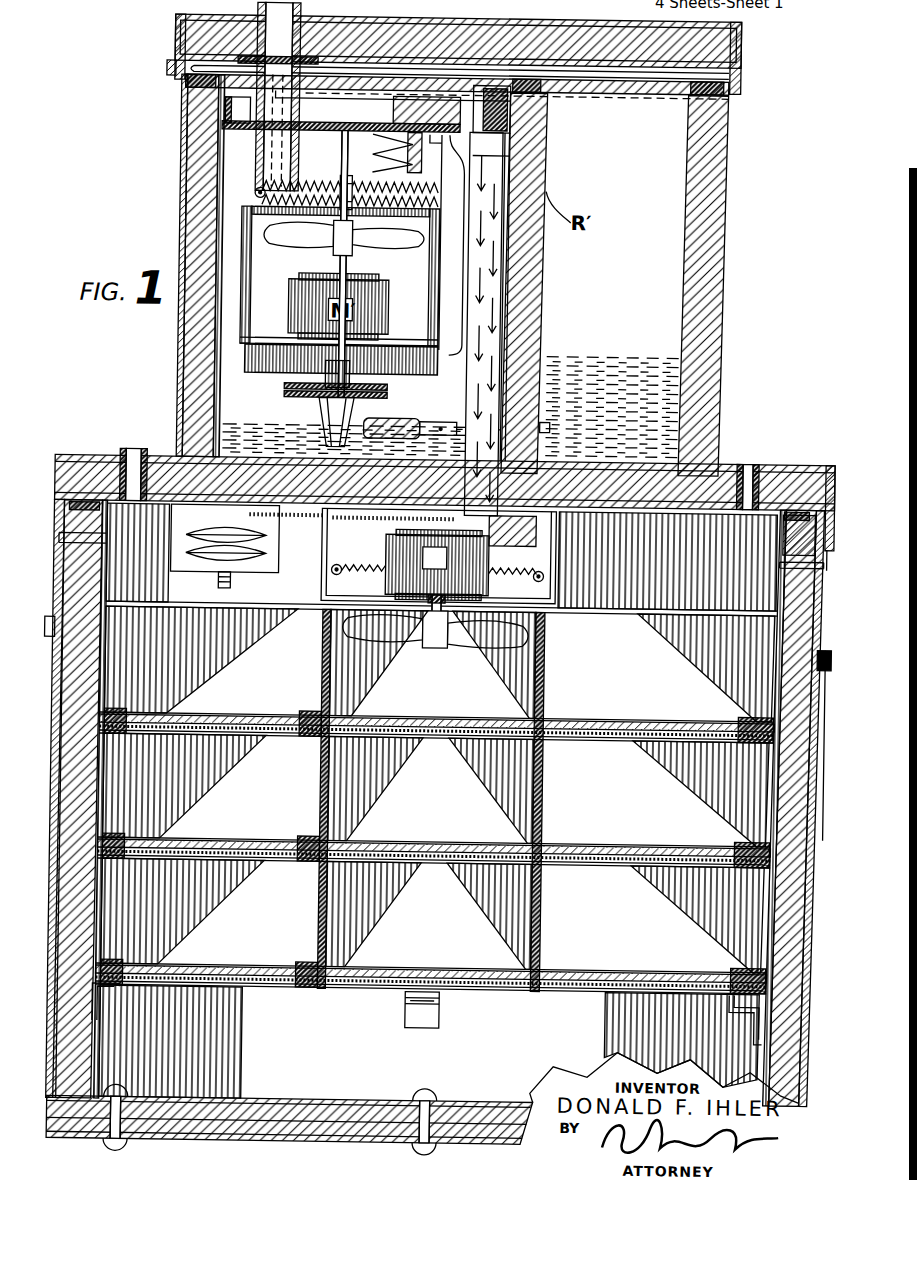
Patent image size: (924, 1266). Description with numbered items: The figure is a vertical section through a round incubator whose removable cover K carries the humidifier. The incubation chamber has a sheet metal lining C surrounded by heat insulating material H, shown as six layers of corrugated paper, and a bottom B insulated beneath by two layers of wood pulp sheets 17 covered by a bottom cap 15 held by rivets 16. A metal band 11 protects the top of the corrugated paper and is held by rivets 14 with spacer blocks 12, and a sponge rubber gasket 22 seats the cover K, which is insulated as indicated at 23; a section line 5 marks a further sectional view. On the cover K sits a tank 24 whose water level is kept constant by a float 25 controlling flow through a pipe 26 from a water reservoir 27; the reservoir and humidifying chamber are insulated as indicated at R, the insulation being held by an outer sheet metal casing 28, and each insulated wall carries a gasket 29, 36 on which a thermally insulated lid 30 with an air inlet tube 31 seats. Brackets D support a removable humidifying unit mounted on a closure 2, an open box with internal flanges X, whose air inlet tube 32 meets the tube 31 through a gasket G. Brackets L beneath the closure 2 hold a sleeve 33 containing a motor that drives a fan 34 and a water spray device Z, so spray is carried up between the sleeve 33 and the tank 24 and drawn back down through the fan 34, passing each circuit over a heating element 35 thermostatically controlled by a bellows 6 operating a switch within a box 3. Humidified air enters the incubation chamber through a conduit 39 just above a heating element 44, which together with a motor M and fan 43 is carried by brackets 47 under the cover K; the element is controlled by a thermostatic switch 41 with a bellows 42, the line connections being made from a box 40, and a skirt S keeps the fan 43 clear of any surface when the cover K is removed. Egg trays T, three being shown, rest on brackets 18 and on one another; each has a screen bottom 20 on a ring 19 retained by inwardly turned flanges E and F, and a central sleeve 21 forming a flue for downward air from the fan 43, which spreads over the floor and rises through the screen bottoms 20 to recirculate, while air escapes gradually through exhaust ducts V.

The closure 2 is at (328, 120).
The box 3 is at (388, 106).
The section line 5 is at (176, 180).
The bellows 6 is at (372, 140).
The metal band 11 is at (58, 637).
The spacer blocks 12 is at (782, 532).
The rivets 14 is at (781, 552).
The bottom cap 15 is at (92, 1138).
The rivets 16 is at (138, 1146).
The wood pulp sheets 17 is at (278, 1122).
The brackets 18 is at (449, 1005).
The ring 19 is at (720, 964).
The screen bottoms 20 is at (592, 964).
The sleeve 21 is at (547, 896).
The gasket 22 is at (786, 478).
The thermal insulation 23 is at (708, 470).
The tank 24 is at (213, 390).
The float 25 is at (392, 414).
The pipe 26 is at (452, 418).
The water reservoir 27 is at (542, 312).
The outer sheet metal casing 28 is at (723, 292).
The gasket 29 is at (698, 80).
The lid 30 is at (169, 33).
The air inlet tube 31 is at (182, 82).
The air inlet tube 32 is at (289, 172).
The sleeve 33 is at (283, 371).
The fan 34 is at (407, 237).
The heating element 35 is at (340, 173).
The gasket 36 is at (503, 84).
The conduit 39 is at (475, 398).
The box 40 is at (537, 526).
The thermostatically controlled switch 41 is at (272, 530).
The bellows 42 is at (266, 553).
The fan 43 is at (463, 640).
The heating element 44 is at (380, 556).
The brackets 47 is at (557, 556).
The bottom B is at (296, 1096).
The sheet metal lining C is at (778, 588).
The brackets D is at (237, 139).
The inwardly turned flange E is at (745, 870).
The inwardly turned flange F is at (733, 998).
The gasket G is at (458, 78).
The heat insulating material H is at (812, 820).
The removable cover K is at (772, 455).
The brackets L is at (208, 265).
The electric motor M is at (437, 565).
The thermal insulation R is at (683, 222).
The skirt S is at (827, 662).
The egg trays T is at (278, 907).
The exhaust ducts V is at (133, 448).
The internal flanges X is at (447, 58).
The water spray device Z is at (318, 400).